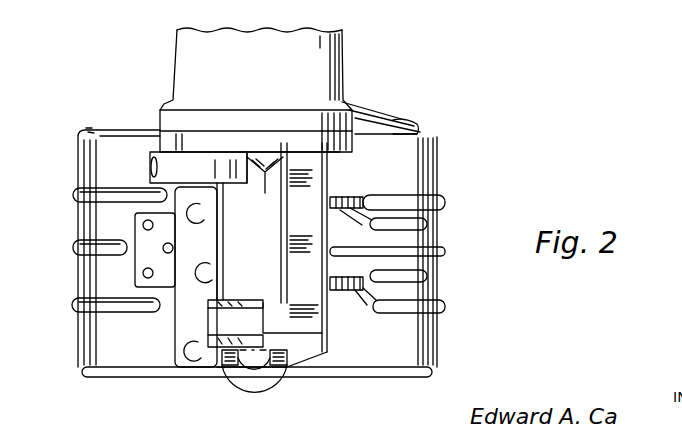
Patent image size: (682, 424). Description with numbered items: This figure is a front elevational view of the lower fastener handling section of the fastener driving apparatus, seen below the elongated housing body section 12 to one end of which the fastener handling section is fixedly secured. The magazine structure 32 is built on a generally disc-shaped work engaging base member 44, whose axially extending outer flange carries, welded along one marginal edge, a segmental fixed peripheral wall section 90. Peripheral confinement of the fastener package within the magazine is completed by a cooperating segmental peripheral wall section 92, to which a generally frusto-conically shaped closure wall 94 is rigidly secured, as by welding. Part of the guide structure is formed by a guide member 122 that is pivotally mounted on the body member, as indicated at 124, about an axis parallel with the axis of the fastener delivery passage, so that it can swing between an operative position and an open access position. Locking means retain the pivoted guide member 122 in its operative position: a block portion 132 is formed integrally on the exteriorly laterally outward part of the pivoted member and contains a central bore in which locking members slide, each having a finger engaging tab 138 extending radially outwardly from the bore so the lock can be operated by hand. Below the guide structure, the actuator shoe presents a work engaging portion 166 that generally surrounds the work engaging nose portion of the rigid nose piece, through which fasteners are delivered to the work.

The housing body section 12 is at (330, 57).
The closure wall 94 is at (168, 104).
The magazine structure 32 is at (413, 117).
The fixed peripheral wall section 90 is at (98, 170).
The cooperating peripheral wall section 92 is at (440, 170).
The work engaging base member 44 is at (367, 377).
The pivot mounting 124 is at (228, 190).
The block portion 132 is at (320, 230).
The pivoted guide member 122 is at (258, 284).
The work engaging portion 166 is at (223, 387).
The finger engaging tab 138 is at (357, 186).